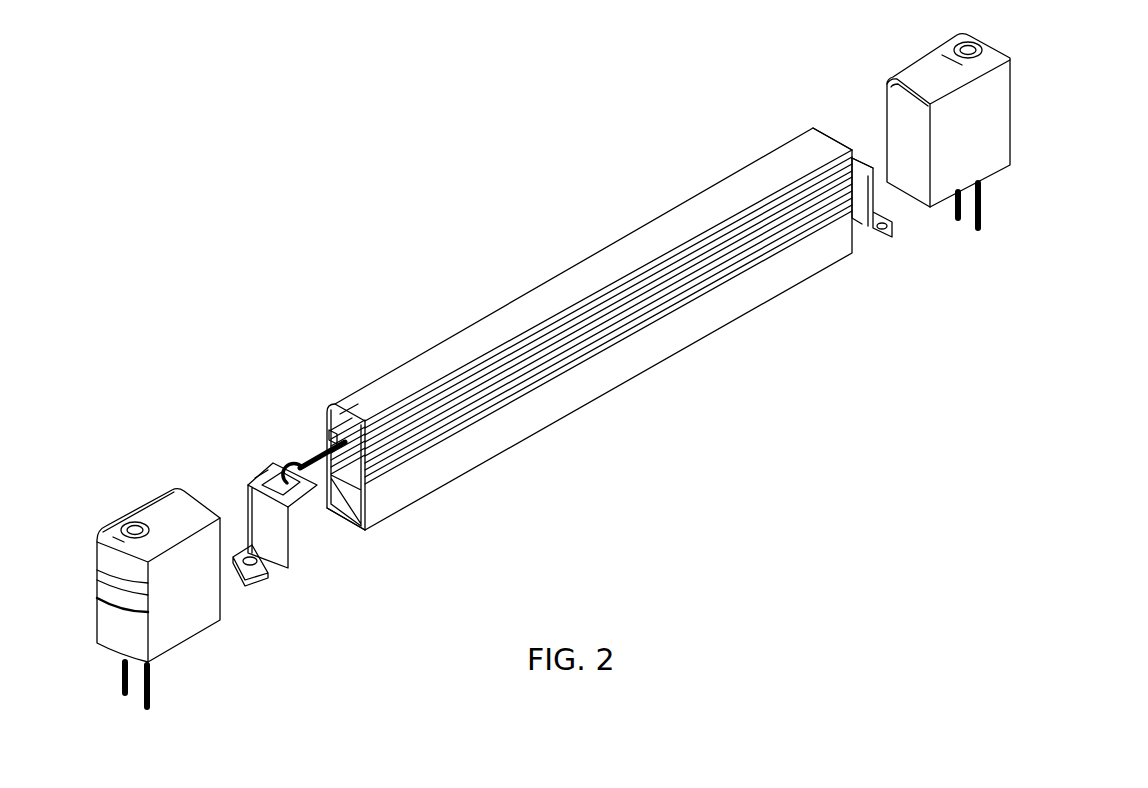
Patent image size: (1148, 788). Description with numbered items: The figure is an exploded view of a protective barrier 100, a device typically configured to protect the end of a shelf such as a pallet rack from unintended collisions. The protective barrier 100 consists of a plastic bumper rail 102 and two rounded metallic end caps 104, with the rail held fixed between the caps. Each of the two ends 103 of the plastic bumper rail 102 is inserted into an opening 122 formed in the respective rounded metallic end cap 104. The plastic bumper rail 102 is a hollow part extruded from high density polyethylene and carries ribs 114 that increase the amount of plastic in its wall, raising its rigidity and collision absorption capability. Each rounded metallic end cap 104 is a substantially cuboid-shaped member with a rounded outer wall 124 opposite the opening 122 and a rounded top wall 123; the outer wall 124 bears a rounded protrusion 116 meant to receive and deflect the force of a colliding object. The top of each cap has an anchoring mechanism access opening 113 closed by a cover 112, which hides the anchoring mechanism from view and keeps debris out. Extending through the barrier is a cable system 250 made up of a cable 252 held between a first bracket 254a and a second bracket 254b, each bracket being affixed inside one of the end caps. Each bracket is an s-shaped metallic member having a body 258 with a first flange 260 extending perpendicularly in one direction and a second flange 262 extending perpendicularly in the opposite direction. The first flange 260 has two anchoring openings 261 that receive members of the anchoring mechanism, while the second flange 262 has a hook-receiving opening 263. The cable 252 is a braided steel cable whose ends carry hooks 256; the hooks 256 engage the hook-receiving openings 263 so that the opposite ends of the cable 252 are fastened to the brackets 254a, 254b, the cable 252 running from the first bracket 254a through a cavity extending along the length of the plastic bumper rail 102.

The protective barrier 100 is at (666, 515).
The plastic bumper rail 102 is at (555, 408).
The ends 103 is at (366, 405).
The rounded metallic end caps 104 is at (950, 202).
The cover 112 is at (993, 50).
The anchoring mechanism access opening 113 is at (945, 70).
The ribs 114 is at (608, 347).
The rounded protrusion 116 is at (136, 604).
The openings 122 is at (262, 580).
The rounded top wall 123 is at (920, 78).
The rounded outer wall 124 is at (120, 632).
The cable system 250 is at (348, 535).
The cable 252 is at (320, 455).
The first bracket 254a is at (247, 486).
The second bracket 254b is at (853, 155).
The hooks 256 is at (282, 468).
The body 258 is at (333, 430).
The first flange 260 is at (268, 575).
The anchoring openings 261 is at (255, 566).
The second flange 262 is at (253, 482).
The hook-receiving opening 263 is at (248, 480).